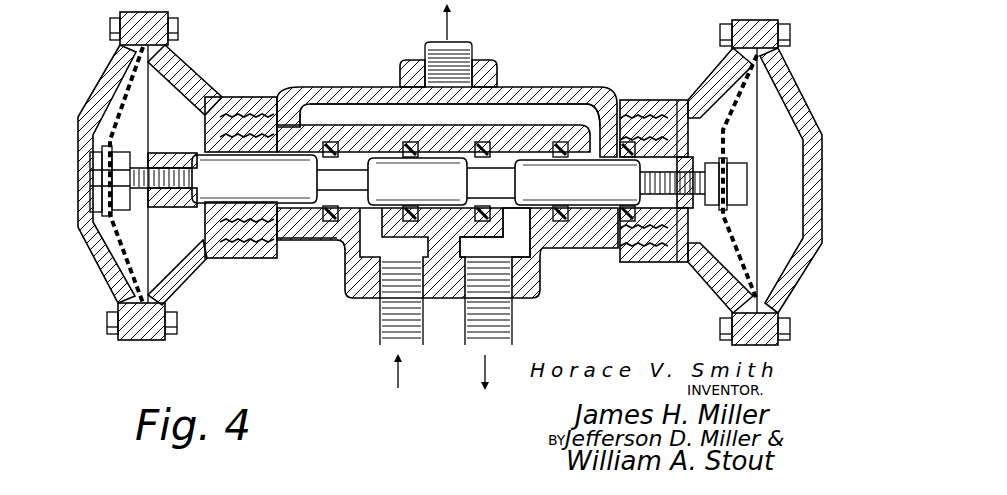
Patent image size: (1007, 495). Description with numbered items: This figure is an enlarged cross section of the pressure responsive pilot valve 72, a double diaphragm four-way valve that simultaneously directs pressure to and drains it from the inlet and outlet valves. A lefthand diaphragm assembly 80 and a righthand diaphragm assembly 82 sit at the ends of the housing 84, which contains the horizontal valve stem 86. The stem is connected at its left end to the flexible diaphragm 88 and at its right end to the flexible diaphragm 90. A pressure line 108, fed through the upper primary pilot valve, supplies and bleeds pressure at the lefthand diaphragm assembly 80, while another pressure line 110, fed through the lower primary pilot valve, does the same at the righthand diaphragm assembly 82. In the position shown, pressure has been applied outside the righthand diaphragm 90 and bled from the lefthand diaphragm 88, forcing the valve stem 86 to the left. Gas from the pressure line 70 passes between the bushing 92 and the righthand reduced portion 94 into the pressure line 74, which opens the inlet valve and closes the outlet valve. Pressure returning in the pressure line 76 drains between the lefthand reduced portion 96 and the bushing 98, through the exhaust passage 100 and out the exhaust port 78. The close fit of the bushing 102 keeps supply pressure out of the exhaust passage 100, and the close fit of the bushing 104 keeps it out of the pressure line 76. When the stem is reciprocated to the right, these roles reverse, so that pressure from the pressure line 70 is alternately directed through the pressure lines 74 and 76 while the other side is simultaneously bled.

The gas pressure line 70 is at (488, 185).
The pressure responsive pilot valve 72 is at (533, 85).
The pressure line 74 is at (520, 313).
The pressure line 76 is at (383, 318).
The exhaust port 78 is at (440, 30).
The lefthand diaphragm assembly 80 is at (183, 60).
The righthand diaphragm assembly 82 is at (713, 73).
The housing 84 is at (293, 95).
The valve stem 86 is at (190, 200).
The flexible diaphragm 88 is at (130, 112).
The flexible diaphragm 90 is at (737, 117).
The bushing 92 is at (497, 150).
The righthand reduced portion 94 is at (515, 150).
The lefthand reduced portion 96 is at (292, 256).
The bushing 98 is at (320, 240).
The exhaust passage 100 is at (330, 108).
The bushing 102 is at (560, 143).
The bushing 104 is at (407, 143).
The pressure line 108 is at (113, 107).
The pressure line 110 is at (802, 93).